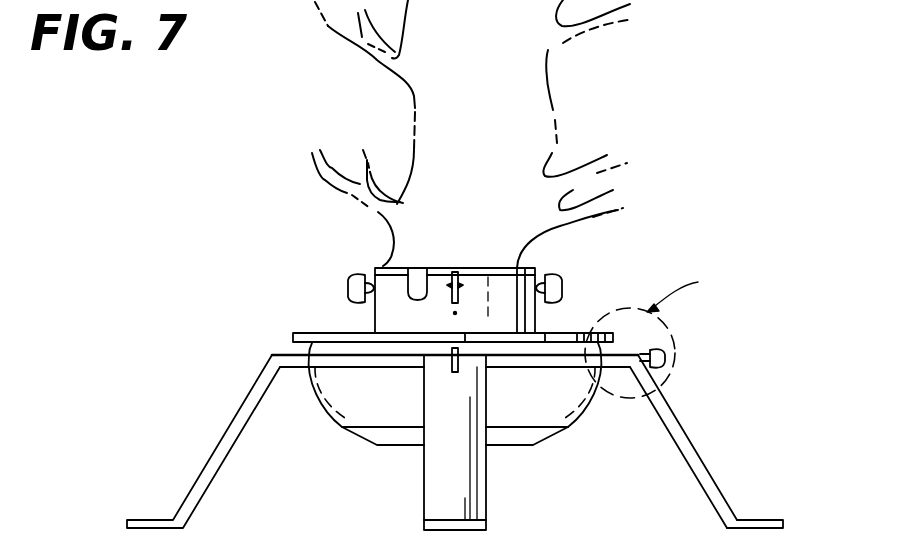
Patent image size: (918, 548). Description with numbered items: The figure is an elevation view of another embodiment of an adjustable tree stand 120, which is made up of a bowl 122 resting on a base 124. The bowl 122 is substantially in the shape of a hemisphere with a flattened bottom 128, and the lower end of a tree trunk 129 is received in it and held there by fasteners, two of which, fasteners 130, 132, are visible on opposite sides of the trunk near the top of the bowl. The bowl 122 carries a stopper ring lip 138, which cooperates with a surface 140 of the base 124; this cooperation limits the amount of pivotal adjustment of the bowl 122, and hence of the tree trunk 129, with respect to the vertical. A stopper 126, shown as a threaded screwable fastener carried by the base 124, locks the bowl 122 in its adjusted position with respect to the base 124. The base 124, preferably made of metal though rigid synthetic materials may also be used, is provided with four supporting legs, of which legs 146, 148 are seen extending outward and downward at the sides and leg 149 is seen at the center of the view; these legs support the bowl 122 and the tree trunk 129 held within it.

The adjustable tree stand 120 is at (268, 368).
The bowl 122 is at (313, 333).
The base 124 is at (702, 452).
The stopper 126 is at (665, 351).
The flattened bottom 128 is at (522, 445).
The tree trunk 129 is at (550, 97).
The fastener 130 is at (350, 274).
The fastener 132 is at (562, 271).
The stopper ring lip 138 is at (603, 331).
The surface 140 is at (293, 353).
The supporting leg 146 is at (190, 487).
The supporting leg 148 is at (727, 497).
The supporting leg 149 is at (420, 512).